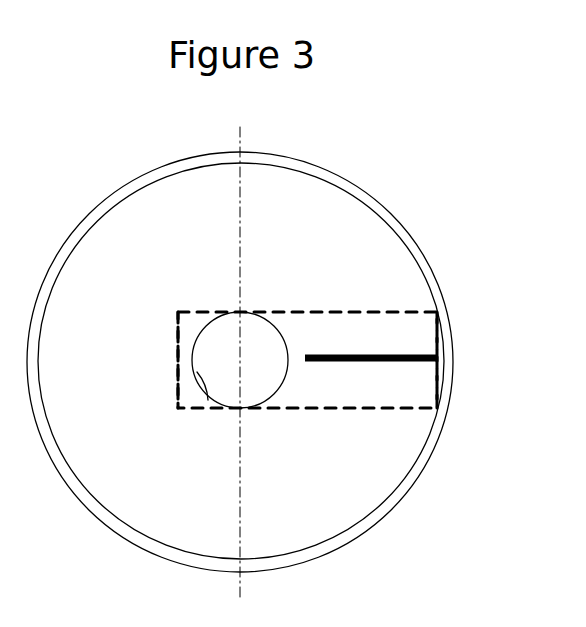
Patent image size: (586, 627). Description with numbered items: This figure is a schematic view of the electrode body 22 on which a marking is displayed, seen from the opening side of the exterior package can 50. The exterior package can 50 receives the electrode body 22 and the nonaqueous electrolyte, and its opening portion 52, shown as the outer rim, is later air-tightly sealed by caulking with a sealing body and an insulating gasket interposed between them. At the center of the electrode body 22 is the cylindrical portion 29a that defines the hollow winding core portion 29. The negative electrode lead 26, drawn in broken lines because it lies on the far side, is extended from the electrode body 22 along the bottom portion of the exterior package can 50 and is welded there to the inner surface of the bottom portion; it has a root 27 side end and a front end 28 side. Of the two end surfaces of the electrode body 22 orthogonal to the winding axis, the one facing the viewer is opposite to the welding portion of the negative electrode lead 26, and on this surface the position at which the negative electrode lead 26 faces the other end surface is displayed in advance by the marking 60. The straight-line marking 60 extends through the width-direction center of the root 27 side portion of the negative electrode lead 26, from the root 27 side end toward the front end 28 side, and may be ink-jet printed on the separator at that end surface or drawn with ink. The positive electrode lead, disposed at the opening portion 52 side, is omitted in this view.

The electrode body 22 is at (266, 197).
The negative electrode lead 26 is at (303, 310).
The root 27 is at (441, 317).
The front end 28 is at (174, 331).
The hollow winding core portion 29 is at (262, 376).
The cylindrical portion 29a is at (196, 372).
The exterior package can 50 is at (423, 249).
The opening portion 52 is at (345, 185).
The marking 60 is at (360, 363).